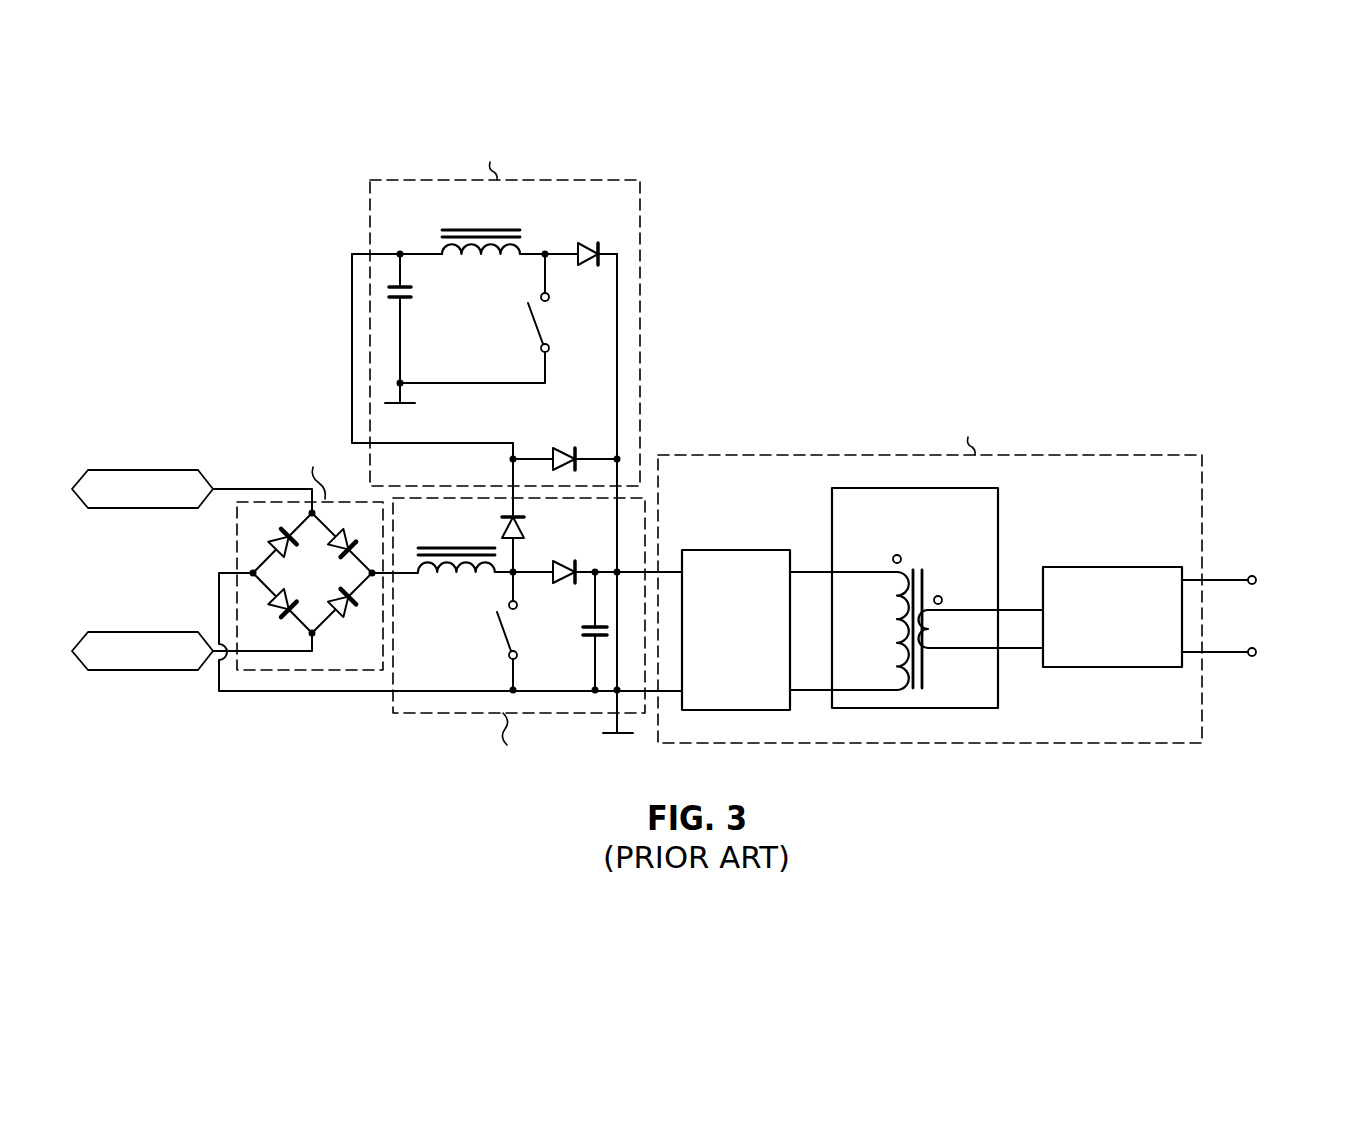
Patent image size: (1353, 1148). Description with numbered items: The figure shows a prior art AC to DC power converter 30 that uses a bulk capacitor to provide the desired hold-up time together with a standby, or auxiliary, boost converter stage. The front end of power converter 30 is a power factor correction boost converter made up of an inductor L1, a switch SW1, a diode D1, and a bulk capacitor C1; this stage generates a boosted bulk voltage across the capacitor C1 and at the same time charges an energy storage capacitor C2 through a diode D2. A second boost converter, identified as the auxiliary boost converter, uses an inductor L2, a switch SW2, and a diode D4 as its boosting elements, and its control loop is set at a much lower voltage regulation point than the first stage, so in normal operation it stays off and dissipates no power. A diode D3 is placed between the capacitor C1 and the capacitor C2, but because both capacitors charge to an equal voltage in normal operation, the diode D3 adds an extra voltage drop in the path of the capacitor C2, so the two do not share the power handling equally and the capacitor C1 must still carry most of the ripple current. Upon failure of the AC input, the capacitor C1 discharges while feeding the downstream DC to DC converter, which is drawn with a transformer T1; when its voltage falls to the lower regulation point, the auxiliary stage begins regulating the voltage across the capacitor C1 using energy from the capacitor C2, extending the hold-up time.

The AC to DC power converter 30 is at (1178, 229).
The inductor L1 is at (456, 544).
The inductor L2 is at (481, 226).
The bulk capacitor C1 is at (577, 628).
The energy storage capacitor C2 is at (417, 293).
The diode D1 is at (579, 562).
The diode D2 is at (530, 521).
The diode D3 is at (565, 442).
The diode D4 is at (590, 237).
The switch SW1 is at (483, 630).
The switch SW2 is at (560, 322).
The transformer T1 is at (917, 596).